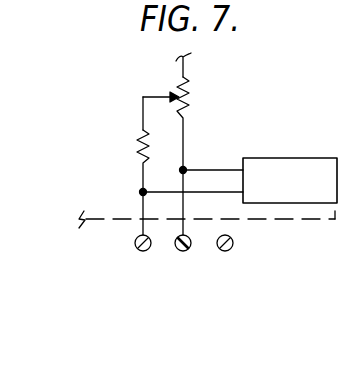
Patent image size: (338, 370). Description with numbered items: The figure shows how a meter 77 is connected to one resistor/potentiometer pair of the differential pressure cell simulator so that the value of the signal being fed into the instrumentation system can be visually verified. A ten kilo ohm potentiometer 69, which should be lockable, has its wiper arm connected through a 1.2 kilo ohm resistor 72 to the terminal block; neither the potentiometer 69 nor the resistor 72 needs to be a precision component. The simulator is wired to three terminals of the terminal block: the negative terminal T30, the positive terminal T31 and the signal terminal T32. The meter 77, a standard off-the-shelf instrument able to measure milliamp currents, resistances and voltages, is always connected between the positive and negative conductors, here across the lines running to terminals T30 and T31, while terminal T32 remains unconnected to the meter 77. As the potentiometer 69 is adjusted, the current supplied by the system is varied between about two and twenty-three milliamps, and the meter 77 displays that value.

The potentiometer 69 is at (190, 85).
The resistor 72 is at (141, 166).
The meter 77 is at (323, 157).
The terminal T30 is at (142, 270).
The terminal T31 is at (177, 270).
The terminal T32 is at (224, 270).